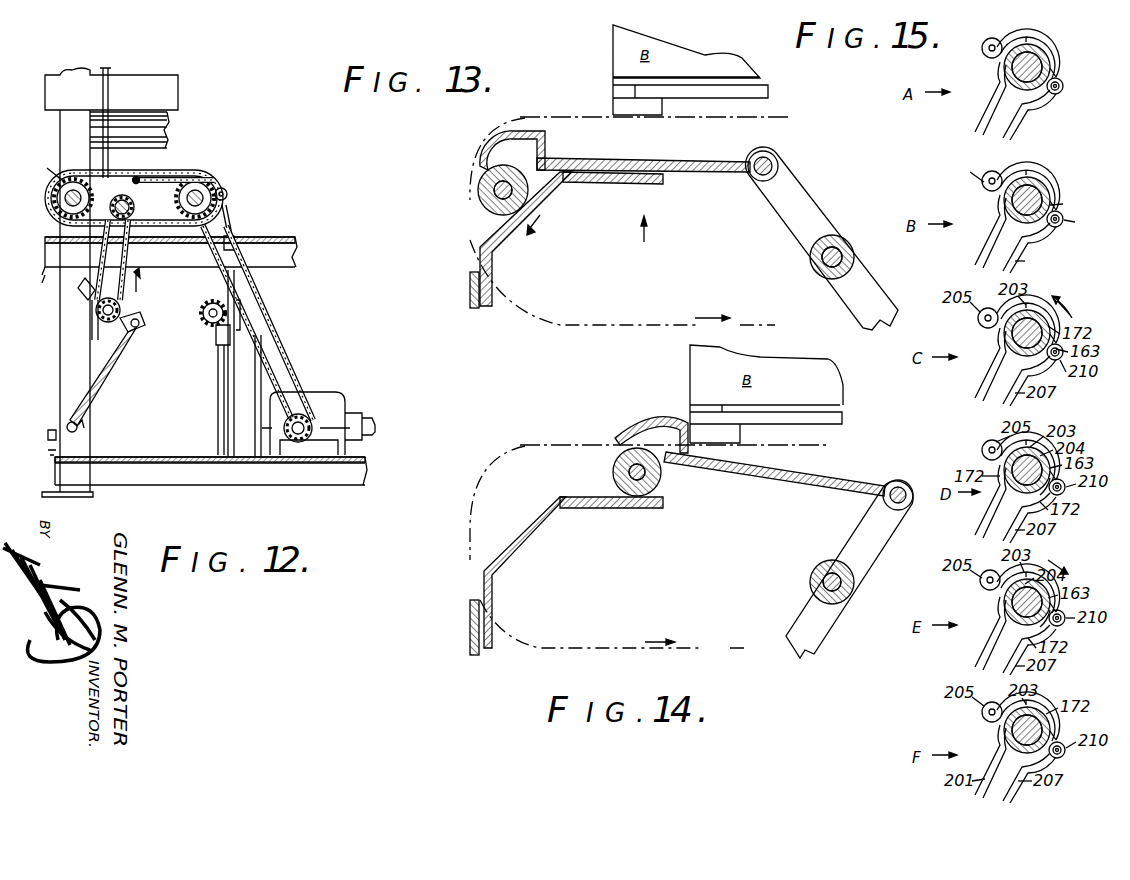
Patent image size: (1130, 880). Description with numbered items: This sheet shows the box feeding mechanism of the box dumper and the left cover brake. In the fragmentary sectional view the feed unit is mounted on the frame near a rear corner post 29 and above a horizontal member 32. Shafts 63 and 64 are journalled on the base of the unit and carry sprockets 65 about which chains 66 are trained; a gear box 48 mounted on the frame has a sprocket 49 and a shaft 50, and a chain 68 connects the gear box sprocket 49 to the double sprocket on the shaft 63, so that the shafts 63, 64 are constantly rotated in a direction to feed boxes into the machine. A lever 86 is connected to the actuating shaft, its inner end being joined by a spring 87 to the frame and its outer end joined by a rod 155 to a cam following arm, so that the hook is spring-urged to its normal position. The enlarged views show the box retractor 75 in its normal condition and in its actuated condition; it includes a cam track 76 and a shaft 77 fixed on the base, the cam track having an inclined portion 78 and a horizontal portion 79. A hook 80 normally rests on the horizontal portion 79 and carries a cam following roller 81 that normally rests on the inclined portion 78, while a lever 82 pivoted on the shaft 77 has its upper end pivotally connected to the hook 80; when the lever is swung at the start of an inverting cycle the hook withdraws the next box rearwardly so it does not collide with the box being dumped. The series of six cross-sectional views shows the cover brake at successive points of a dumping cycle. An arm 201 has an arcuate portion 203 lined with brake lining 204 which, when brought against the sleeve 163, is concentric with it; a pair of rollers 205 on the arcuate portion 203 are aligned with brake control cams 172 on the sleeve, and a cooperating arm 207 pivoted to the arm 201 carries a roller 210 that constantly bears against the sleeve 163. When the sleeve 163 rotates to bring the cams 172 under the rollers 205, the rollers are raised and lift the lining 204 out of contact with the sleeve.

In FIG. 12, the rear corner post 29 is at (62, 378).
In FIG. 12, the horizontal member 32 is at (218, 474).
In FIG. 12, the gear box 48 is at (320, 402).
In FIG. 12, the sprocket 49 is at (296, 418).
In FIG. 12, the shaft 50 is at (360, 425).
In FIG. 12, the shaft 63 is at (184, 198).
In FIG. 12, the shaft 64 is at (66, 206).
In FIG. 12, the sprockets 65 is at (47, 165).
In FIG. 12, the chains 66 is at (48, 206).
In FIG. 12, the chain 68 is at (272, 336).
In FIG. 13, the box retractor 75 is at (644, 243).
In FIG. 13, the cam track 76 is at (530, 228).
In FIG. 13, the shaft 77 is at (814, 272).
In FIG. 14, the shaft 77 is at (818, 565).
In FIG. 12, the inclined portion 78 is at (226, 218).
In FIG. 13, the inclined portion 78 is at (540, 196).
In FIG. 14, the inclined portion 78 is at (528, 535).
In FIG. 13, the horizontal portion 79 is at (615, 180).
In FIG. 14, the horizontal portion 79 is at (628, 510).
In FIG. 12, the hook 80 is at (212, 180).
In FIG. 13, the hook 80 is at (670, 152).
In FIG. 14, the hook 80 is at (778, 468).
In FIG. 12, the cam following roller 81 is at (228, 194).
In FIG. 13, the cam following roller 81 is at (480, 190).
In FIG. 14, the cam following roller 81 is at (612, 468).
In FIG. 12, the lever 82 is at (133, 196).
In FIG. 13, the lever 82 is at (803, 198).
In FIG. 14, the lever 82 is at (865, 510).
In FIG. 12, the lever 86 is at (124, 322).
In FIG. 12, the spring 87 is at (106, 390).
In FIG. 12, the rod 155 is at (109, 160).
In FIG. 15, the sleeve 163 is at (1050, 74).
In FIG. 15, the brake control cams 172 is at (1050, 191).
In FIG. 15, the arm 201 is at (985, 118).
In FIG. 15, the arcuate portion 203 is at (1028, 172).
In FIG. 15, the brake lining 204 is at (1000, 78).
In FIG. 15, the rollers 205 is at (995, 40).
In FIG. 15, the cooperating arm 207 is at (1015, 128).
In FIG. 15, the roller 210 is at (1064, 87).